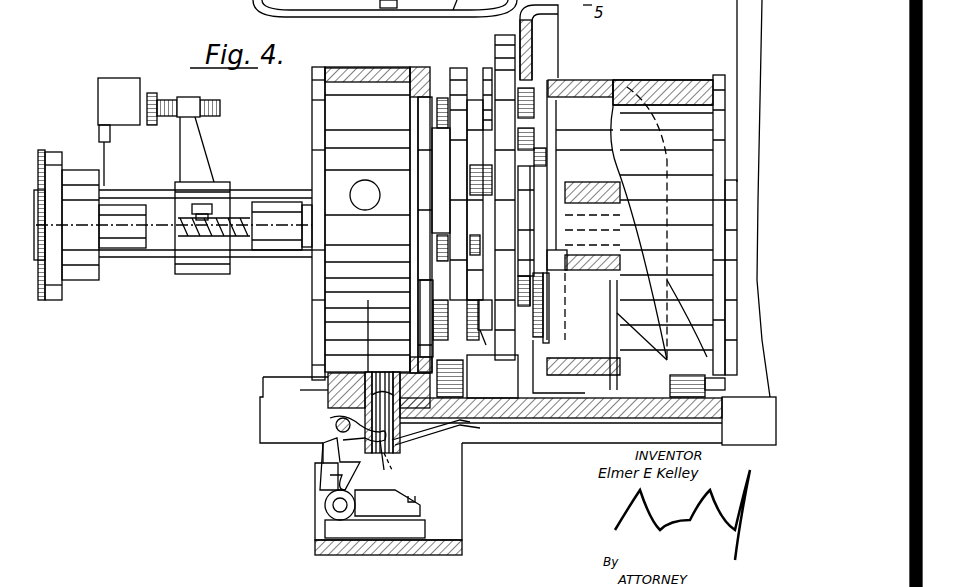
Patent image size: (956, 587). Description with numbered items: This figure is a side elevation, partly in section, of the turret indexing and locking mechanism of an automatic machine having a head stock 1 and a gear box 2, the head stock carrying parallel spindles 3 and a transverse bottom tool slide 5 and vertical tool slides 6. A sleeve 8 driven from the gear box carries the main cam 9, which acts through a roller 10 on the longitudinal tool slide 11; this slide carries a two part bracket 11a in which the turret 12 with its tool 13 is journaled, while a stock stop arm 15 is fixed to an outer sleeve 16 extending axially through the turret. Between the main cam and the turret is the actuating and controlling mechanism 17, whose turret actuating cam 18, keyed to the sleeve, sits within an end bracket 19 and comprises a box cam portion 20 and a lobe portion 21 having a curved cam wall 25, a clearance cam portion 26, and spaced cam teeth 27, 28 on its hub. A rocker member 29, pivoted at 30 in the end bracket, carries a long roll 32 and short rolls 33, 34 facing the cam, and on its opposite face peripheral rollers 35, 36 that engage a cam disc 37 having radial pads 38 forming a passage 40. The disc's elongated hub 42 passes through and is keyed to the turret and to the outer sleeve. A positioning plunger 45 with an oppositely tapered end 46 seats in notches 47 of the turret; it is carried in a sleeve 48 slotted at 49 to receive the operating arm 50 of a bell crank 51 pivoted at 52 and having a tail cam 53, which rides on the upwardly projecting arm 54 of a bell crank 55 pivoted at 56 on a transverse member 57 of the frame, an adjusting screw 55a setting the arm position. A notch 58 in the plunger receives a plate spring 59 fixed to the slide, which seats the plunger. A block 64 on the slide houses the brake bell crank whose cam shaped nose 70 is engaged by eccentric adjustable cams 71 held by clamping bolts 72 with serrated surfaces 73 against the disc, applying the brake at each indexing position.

The head stock 1 is at (42, 152).
The gear box 2 is at (737, 6).
The spindles 3 is at (75, 190).
The transverse bottom tool slide 5 is at (575, 313).
The vertical tool slides 6 is at (107, 99).
The sleeve 8 is at (590, 205).
The main cam 9 is at (683, 90).
The cam follower or roller 10 is at (725, 386).
The longitudinal tool slide 11 is at (598, 415).
The two part bracket 11a is at (357, 72).
The turret 12 is at (312, 93).
The tool 13 is at (244, 233).
The stock stop arm 15 is at (198, 158).
The outer sleeve 16 is at (250, 193).
The actuating and controlling mechanism 17 is at (452, 58).
The turret actuating cam 18 is at (556, 190).
The end bracket 19 is at (372, 277).
The box cam portion 20 is at (545, 296).
The lobe portion 21 is at (577, 308).
The curved cam wall 25 is at (556, 341).
The clearance cam portion 26 is at (560, 270).
The cam tooth 27 is at (530, 248).
The cam tooth 28 is at (518, 181).
The rocker member 29 is at (497, 40).
The pivot 30 is at (488, 95).
The long roll 32 is at (546, 152).
The short roll 33 is at (534, 138).
The short roll 34 is at (534, 105).
The roller 35 is at (470, 170).
The roller 36 is at (493, 328).
The cam disc 37 is at (458, 70).
The radial pads 38 is at (470, 296).
The passage 40 is at (470, 330).
The elongated hub 42 is at (432, 188).
The positioning plunger 45 is at (384, 412).
The oppositely tapered end 46 is at (382, 412).
The notches 47 is at (368, 360).
The sleeve 48 is at (330, 400).
The slot 49 is at (366, 455).
The operating arm 50 is at (360, 432).
The bell crank 51 is at (333, 445).
The pivot 52 is at (336, 425).
The tail cam 53 is at (328, 468).
The upwardly projecting arm 54 is at (335, 482).
The bell crank 55 is at (375, 520).
The adjusting screw 55a is at (418, 500).
The pivot 56 is at (333, 506).
The transverse member 57 is at (462, 548).
The notch 58 is at (397, 466).
The plate spring 59 is at (428, 430).
The block 64 is at (480, 369).
The cam shaped nose 70 is at (462, 367).
The eccentric adjustable cams 71 is at (437, 110).
The clamping bolts 72 is at (472, 242).
The serrated surfaces 73 is at (442, 250).